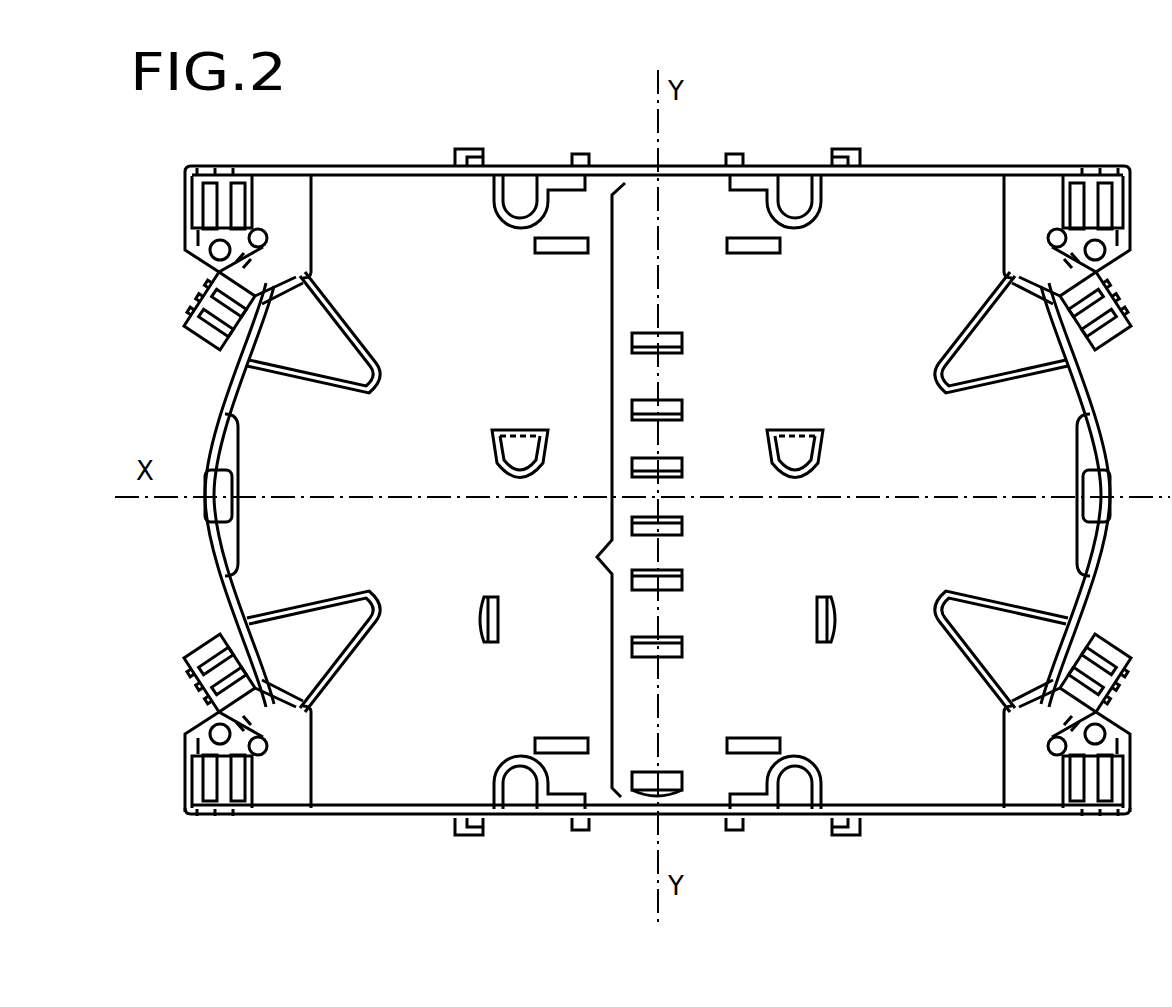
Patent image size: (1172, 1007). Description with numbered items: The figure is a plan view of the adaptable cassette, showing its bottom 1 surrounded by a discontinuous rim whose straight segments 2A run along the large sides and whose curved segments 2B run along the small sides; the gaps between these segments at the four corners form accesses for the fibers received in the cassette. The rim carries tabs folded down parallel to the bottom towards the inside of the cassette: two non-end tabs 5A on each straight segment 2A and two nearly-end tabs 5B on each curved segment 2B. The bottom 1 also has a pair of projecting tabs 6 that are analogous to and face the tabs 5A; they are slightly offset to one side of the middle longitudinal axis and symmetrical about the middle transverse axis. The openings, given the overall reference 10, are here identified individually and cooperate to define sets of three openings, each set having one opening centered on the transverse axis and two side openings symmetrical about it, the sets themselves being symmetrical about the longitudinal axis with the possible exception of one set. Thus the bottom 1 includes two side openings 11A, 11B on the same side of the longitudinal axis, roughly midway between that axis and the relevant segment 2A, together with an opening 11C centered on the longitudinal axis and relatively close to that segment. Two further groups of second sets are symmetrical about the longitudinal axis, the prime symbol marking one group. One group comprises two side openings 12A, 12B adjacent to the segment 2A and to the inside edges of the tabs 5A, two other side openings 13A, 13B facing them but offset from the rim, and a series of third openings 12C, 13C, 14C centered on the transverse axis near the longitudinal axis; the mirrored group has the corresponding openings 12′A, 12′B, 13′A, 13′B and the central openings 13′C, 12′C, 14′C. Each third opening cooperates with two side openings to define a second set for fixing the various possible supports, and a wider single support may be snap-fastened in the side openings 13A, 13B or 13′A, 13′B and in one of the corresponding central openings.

The bottom 1 is at (262, 447).
The rim segment along large side 2A is at (934, 170).
The rim segment along small side 2B is at (1097, 392).
The non-end tab 5A is at (510, 205).
The nearly-end tab 5B is at (297, 360).
The projecting tab 6 is at (506, 455).
The openings 10 is at (591, 570).
The side opening 11A is at (480, 626).
The side opening 11B is at (833, 628).
The opening 11C is at (660, 781).
The side opening 12A is at (568, 180).
The side opening 12B is at (758, 180).
The side opening 12′A is at (558, 800).
The side opening 12′B is at (755, 800).
The third opening 12C is at (676, 414).
The third opening 12′C is at (676, 582).
The side opening 13A is at (568, 255).
The side opening 13B is at (746, 255).
The side opening 13′A is at (565, 738).
The side opening 13′B is at (750, 738).
The third opening 13C is at (676, 470).
The third opening 13′C is at (676, 523).
The third opening 14C is at (676, 348).
The third opening 14′C is at (676, 652).